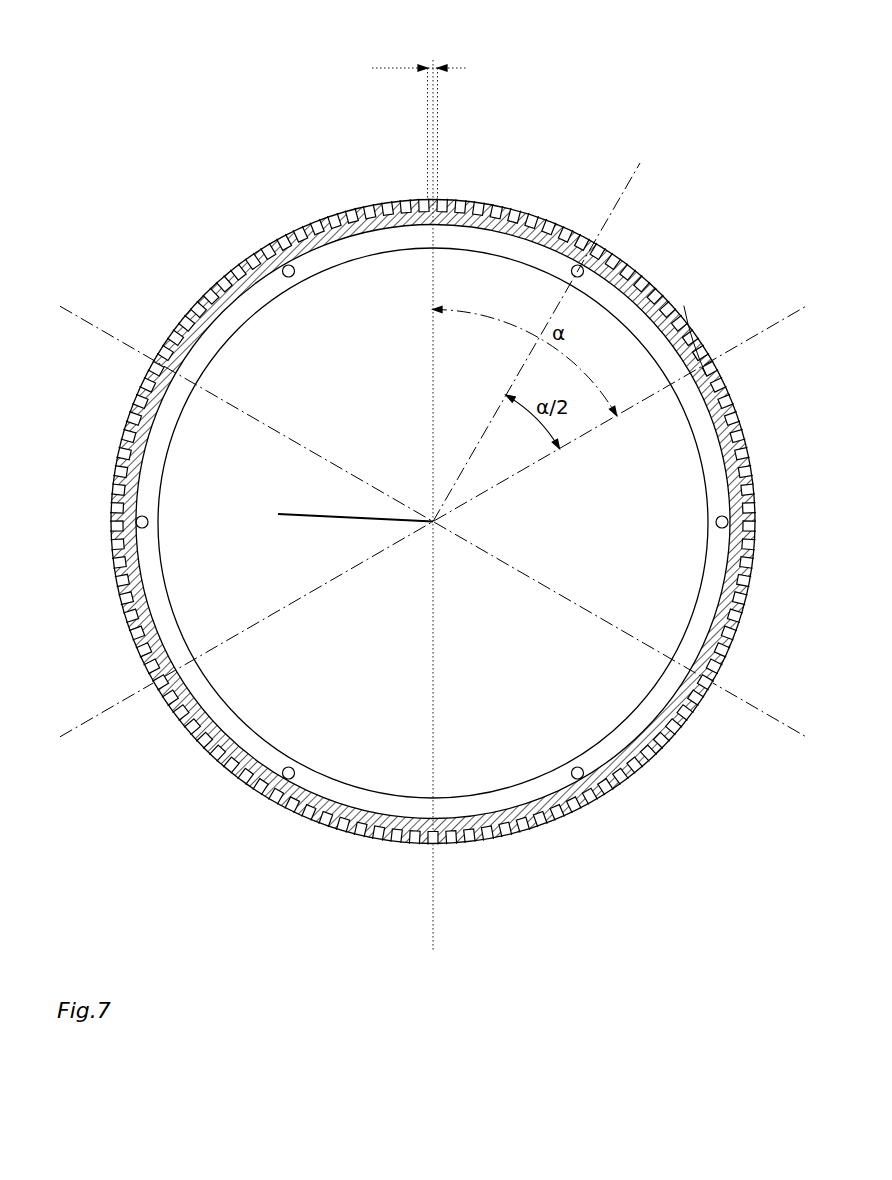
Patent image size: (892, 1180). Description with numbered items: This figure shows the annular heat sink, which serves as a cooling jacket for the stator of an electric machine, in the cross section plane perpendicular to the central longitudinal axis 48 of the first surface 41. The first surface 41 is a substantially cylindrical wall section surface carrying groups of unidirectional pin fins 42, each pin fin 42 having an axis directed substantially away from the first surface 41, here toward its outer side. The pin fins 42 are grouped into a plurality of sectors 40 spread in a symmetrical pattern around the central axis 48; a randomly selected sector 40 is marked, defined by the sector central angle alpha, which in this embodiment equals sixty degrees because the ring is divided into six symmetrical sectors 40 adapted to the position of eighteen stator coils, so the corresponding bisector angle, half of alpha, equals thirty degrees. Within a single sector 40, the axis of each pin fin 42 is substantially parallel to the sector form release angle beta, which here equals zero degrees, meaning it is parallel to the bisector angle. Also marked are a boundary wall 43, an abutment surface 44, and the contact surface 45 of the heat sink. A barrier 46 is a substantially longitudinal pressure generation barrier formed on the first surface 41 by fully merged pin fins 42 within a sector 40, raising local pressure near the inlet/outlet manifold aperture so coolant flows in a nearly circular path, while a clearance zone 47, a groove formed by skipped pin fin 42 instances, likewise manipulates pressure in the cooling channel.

The sector 40 is at (655, 267).
The first surface 41 is at (542, 210).
The pin fin 42 is at (555, 214).
The boundary wall 43 is at (574, 223).
The abutment surface 44 is at (660, 304).
The contact surface 45 is at (707, 332).
The barrier 46 is at (703, 349).
The clearance zone 47 is at (436, 61).
The central longitudinal axis 48 is at (341, 517).